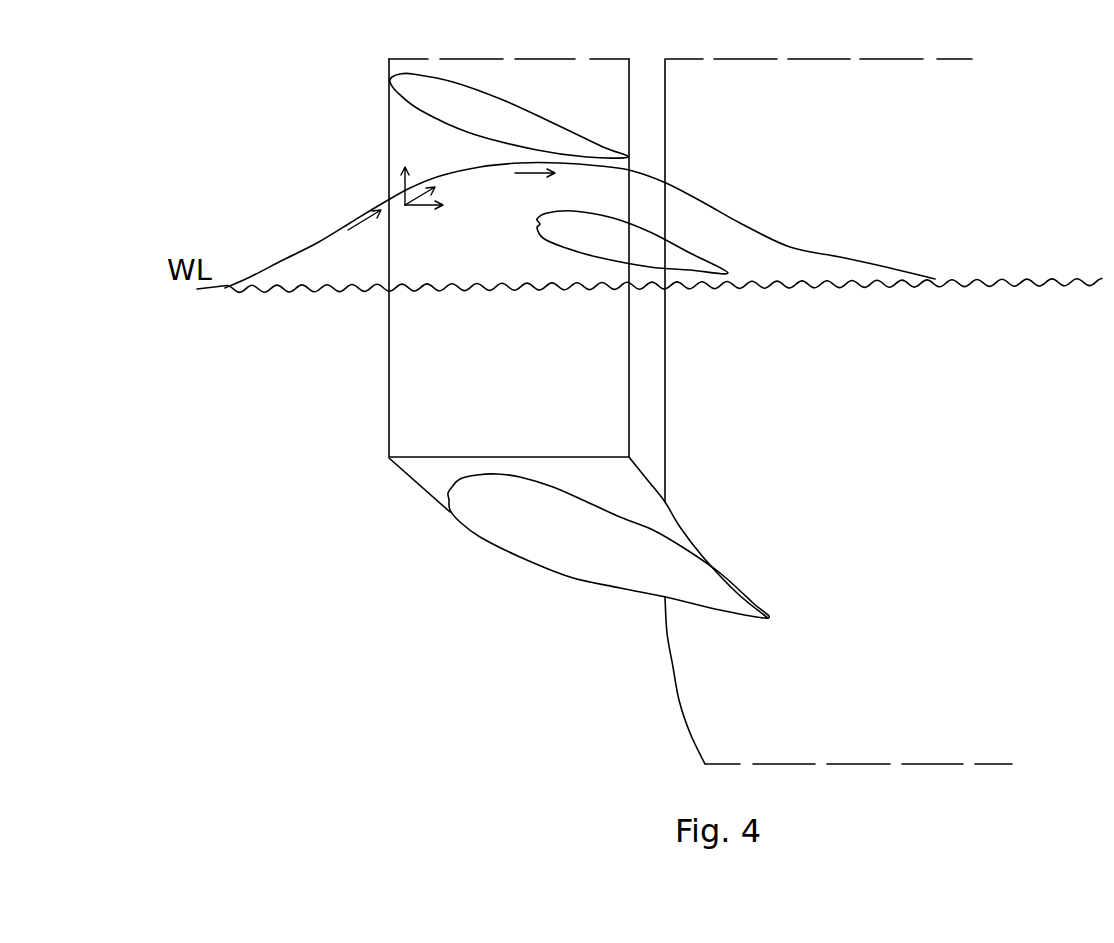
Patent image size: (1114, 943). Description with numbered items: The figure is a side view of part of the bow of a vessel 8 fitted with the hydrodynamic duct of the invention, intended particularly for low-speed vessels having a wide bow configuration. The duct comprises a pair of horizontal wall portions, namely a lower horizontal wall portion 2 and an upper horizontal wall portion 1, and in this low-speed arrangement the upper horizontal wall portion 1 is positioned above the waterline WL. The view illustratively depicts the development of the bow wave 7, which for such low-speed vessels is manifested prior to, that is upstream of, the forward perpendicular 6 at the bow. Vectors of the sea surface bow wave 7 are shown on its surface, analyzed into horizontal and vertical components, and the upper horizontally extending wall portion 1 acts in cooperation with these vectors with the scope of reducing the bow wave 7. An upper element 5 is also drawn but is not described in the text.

The upper horizontal wall portion 1 is at (709, 283).
The lower horizontal wall portion 2 is at (680, 549).
The upper foil section 5 is at (421, 67).
The forward perpendicular 6 is at (675, 117).
The bow wave 7 is at (713, 207).
The vessel 8 is at (942, 785).